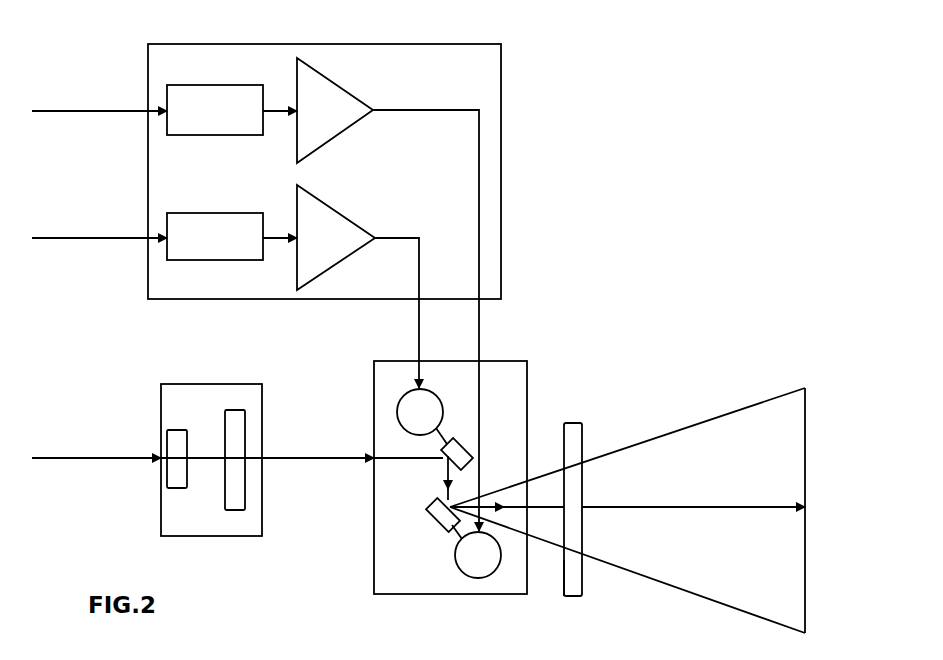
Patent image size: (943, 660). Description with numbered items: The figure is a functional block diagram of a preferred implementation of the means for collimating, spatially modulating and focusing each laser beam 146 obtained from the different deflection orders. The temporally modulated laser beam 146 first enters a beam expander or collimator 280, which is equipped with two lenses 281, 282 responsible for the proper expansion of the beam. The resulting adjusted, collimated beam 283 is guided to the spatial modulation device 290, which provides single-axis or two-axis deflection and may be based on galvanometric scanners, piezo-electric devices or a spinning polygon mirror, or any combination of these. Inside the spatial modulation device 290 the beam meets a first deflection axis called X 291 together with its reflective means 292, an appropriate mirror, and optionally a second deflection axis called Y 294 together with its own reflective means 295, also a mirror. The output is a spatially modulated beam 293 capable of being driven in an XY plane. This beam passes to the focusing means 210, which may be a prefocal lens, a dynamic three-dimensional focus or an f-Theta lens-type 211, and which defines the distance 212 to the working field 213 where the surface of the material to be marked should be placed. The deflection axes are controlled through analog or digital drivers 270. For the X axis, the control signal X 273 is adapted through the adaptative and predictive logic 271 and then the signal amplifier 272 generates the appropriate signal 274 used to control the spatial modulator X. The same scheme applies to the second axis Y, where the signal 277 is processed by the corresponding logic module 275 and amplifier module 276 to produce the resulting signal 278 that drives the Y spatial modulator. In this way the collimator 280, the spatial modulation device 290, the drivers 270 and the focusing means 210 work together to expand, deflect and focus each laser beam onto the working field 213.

The laser beam 146 is at (147, 448).
The focusing means 210 is at (579, 498).
The f-Theta lens-type 211 is at (579, 588).
The distance 212 is at (693, 500).
The working field 213 is at (644, 510).
The drivers 270 is at (324, 161).
The adaptative and predictive logic 271 is at (232, 236).
The signal amplifier 272 is at (336, 237).
The control signal X 273 is at (99, 227).
The signal 274 is at (397, 302).
The adaptative and predictive logic module 275 is at (232, 110).
The signal amplifier module 276 is at (335, 110).
The signal 277 is at (99, 100).
The resulting signal 278 is at (426, 310).
The beam expander or collimator 280 is at (211, 450).
The lens 281 is at (181, 471).
The lens 282 is at (239, 470).
The adjusted beam 283 is at (352, 449).
The spatial modulation device 290 is at (450, 466).
The first deflection axis X 291 is at (422, 416).
The reflective means 292 is at (458, 459).
The spatially modulated beam 293 is at (508, 497).
The second deflection axis Y 294 is at (478, 555).
The reflective means 295 is at (436, 519).